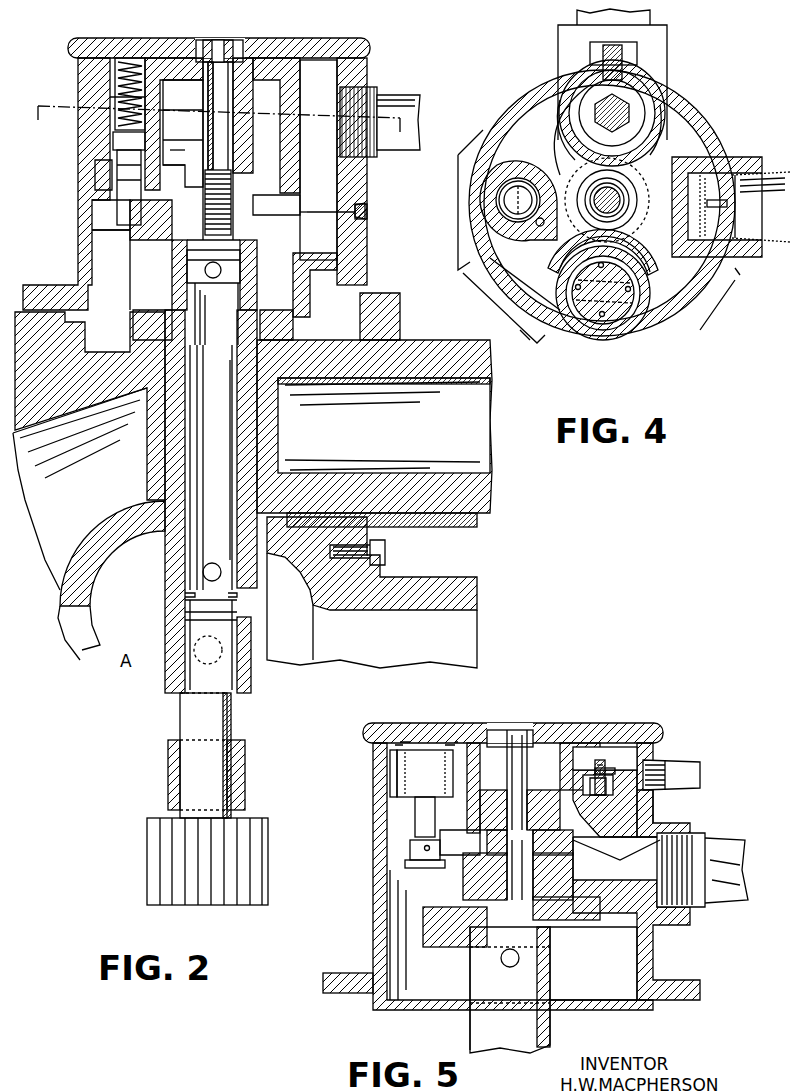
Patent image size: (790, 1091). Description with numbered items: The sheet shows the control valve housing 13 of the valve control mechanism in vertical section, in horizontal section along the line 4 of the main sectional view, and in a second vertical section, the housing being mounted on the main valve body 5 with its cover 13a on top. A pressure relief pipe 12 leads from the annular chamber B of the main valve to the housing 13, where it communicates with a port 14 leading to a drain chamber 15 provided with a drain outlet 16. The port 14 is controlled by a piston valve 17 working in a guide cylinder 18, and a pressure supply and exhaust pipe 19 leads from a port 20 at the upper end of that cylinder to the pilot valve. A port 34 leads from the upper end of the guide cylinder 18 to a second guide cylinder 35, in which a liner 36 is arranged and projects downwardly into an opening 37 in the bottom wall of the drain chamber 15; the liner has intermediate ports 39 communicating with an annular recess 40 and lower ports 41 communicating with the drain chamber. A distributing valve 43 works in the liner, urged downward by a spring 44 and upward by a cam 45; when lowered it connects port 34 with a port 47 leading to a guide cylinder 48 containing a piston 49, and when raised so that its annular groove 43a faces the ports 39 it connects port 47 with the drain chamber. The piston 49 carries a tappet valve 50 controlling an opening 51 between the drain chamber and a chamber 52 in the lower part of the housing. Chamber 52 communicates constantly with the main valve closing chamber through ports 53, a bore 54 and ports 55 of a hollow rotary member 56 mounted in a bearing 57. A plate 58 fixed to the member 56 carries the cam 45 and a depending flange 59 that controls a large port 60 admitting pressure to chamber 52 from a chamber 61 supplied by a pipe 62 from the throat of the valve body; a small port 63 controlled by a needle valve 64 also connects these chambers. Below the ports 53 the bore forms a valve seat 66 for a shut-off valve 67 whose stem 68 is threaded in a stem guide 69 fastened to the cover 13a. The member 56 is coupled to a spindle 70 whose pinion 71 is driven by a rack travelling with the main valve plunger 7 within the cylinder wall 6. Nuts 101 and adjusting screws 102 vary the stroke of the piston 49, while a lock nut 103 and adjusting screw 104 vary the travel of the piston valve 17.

In FIG. 2, the section line 4— 4 is at (223, 133).
In FIG. 2, the valve body 5 is at (462, 340).
In FIG. 2, the cylinder bore wall 6 is at (118, 530).
In FIG. 2, the main valve plunger 7 is at (385, 605).
In FIG. 4, the pressure relief pipe 12 is at (650, 20).
In FIG. 5, the pressure relief pipe 12 is at (718, 840).
In FIG. 2, the control housing 13 is at (78, 240).
In FIG. 2, the cover 13a is at (287, 42).
In FIG. 5, the cover 13a is at (440, 722).
In FIG. 5, the port 14 is at (616, 858).
In FIG. 2, the drain chamber 15 is at (222, 125).
In FIG. 4, the drain chamber 15 is at (552, 130).
In FIG. 5, the drain chamber 15 is at (506, 864).
In FIG. 4, the drain outlet 16 is at (475, 270).
In FIG. 4, the piston valve 17 is at (668, 95).
In FIG. 5, the piston valve 17 is at (598, 790).
In FIG. 4, the guide cylinder 18 is at (650, 118).
In FIG. 5, the guide cylinder 18 is at (660, 805).
In FIG. 5, the pressure supply and exhaust pipe 19 is at (690, 770).
In FIG. 4, the port 20 is at (624, 66).
In FIG. 5, the port 20 is at (650, 755).
In FIG. 5, the port 34 is at (600, 747).
In FIG. 4, the second guide cylinder 35 is at (530, 178).
In FIG. 2, the liner 36 is at (110, 97).
In FIG. 4, the liner 36 is at (496, 195).
In FIG. 2, the opening 37 is at (97, 188).
In FIG. 2, the intermediate ports 39 is at (183, 133).
In FIG. 2, the annular recess 40 is at (182, 145).
In FIG. 2, the lower ports 41 is at (172, 168).
In FIG. 2, the distributing valve 43 is at (129, 187).
In FIG. 4, the distributing valve 43 is at (508, 203).
In FIG. 2, the annular groove or port 43a is at (113, 150).
In FIG. 2, the spring 44 is at (133, 62).
In FIG. 4, the spring 44 is at (526, 220).
In FIG. 2, the cam 45 is at (134, 227).
In FIG. 5, the cam 45 is at (600, 912).
In FIG. 5, the port 47 is at (512, 740).
In FIG. 5, the guide cylinder 48 is at (415, 810).
In FIG. 4, the piston 49 is at (612, 310).
In FIG. 5, the piston 49 is at (425, 773).
In FIG. 5, the tappet valve 50 is at (424, 870).
In FIG. 5, the opening 51 is at (408, 850).
In FIG. 2, the chamber 52 is at (111, 270).
In FIG. 5, the chamber 52 is at (553, 990).
In FIG. 2, the ports 53 is at (250, 265).
In FIG. 2, the bore 54 is at (225, 450).
In FIG. 2, the ports 55 is at (205, 600).
In FIG. 2, the hollow rotary member 56 is at (260, 420).
In FIG. 2, the bearing 57 is at (145, 450).
In FIG. 2, the plate 58 is at (167, 228).
In FIG. 4, the plate 58 is at (665, 275).
In FIG. 5, the plate 58 is at (560, 920).
In FIG. 2, the depending flange 59 is at (111, 240).
In FIG. 5, the depending flange 59 is at (433, 950).
In FIG. 2, the port 60 is at (300, 246).
In FIG. 2, the chamber 61 is at (360, 148).
In FIG. 4, the chamber 61 is at (720, 162).
In FIG. 2, the pipe 62 is at (395, 90).
In FIG. 4, the pipe 62 is at (745, 207).
In FIG. 2, the port 63 is at (305, 205).
In FIG. 2, the needle valve 64 is at (312, 217).
In FIG. 4, the needle valve 64 is at (720, 210).
In FIG. 2, the valve seat 66 is at (213, 287).
In FIG. 2, the shut-off valve 67 is at (221, 270).
In FIG. 2, the valve stem 68 is at (233, 157).
In FIG. 4, the valve stem 68 is at (625, 185).
In FIG. 5, the valve stem 68 is at (545, 745).
In FIG. 2, the stem guide 69 is at (233, 125).
In FIG. 4, the stem guide 69 is at (617, 212).
In FIG. 5, the stem guide 69 is at (530, 856).
In FIG. 2, the spindle 70 is at (185, 714).
In FIG. 2, the pinion 71 is at (160, 848).
In FIG. 5, the nuts 101 is at (455, 748).
In FIG. 4, the adjusting screws 102 is at (585, 330).
In FIG. 5, the adjusting screws 102 is at (390, 790).
In FIG. 5, the lock nut 103 is at (615, 748).
In FIG. 4, the adjusting screw 104 is at (598, 112).
In FIG. 5, the adjusting screw 104 is at (605, 765).
In FIG. 2, the annular chamber B is at (372, 552).